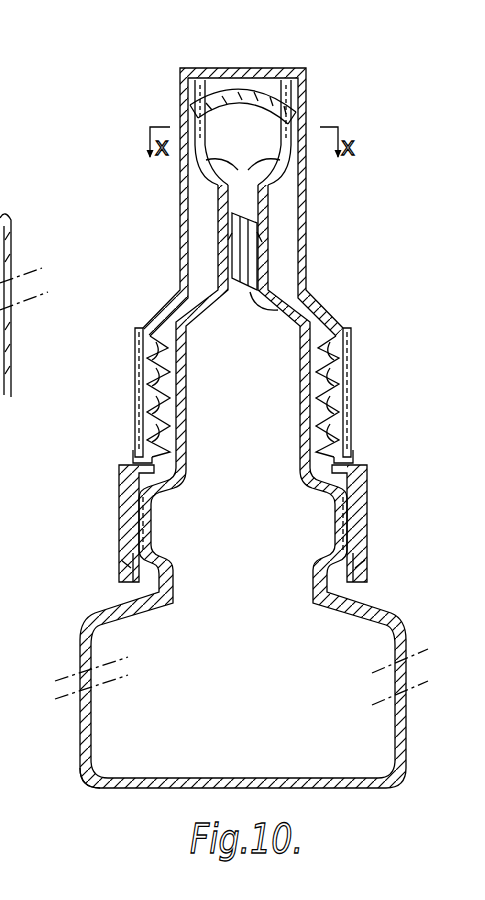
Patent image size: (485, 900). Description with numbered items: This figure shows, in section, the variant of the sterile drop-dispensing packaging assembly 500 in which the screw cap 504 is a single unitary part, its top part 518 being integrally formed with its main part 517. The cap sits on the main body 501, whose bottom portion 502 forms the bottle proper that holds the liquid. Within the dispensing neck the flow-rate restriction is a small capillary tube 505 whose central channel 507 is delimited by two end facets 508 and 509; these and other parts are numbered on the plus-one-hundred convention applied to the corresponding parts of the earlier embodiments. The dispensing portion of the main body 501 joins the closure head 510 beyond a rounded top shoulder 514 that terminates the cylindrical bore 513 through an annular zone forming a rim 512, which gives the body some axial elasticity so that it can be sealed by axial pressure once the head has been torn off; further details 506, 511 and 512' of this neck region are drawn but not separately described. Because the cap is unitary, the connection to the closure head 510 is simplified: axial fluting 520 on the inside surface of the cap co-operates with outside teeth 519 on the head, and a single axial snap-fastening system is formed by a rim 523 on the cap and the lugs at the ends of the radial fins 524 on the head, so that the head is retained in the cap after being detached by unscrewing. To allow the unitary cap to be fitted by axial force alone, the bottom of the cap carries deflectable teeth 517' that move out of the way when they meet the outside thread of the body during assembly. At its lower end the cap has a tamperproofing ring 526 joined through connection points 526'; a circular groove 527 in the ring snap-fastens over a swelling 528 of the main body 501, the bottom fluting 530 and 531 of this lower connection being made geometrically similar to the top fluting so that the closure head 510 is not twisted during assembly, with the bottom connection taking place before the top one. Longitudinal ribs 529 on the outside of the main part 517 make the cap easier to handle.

The packaging assembly 500 is at (48, 467).
The main body 501 is at (77, 650).
The bottom portion 502 is at (82, 743).
The screw cap 504 is at (175, 283).
The capillary tube 505 is at (267, 265).
The valve seat 506 is at (233, 228).
The central channel 507 is at (230, 258).
The end facet 508 is at (267, 240).
The end facet 509 is at (317, 313).
The closure head 510 is at (305, 193).
The upper sleeve portion 511 is at (192, 133).
The rim 512 is at (336, 225).
The diaphragm / dome membrane 512' is at (214, 84).
The cylindrical bore 513 is at (200, 202).
The rounded top shoulder 514 is at (192, 190).
The main part 517 is at (121, 395).
The skirt flange 517' is at (103, 343).
The top part 518 is at (272, 178).
The outside teeth 519 is at (298, 97).
The axial fluting 520 is at (307, 173).
The rim 523 is at (307, 97).
The radial fins 524 is at (208, 82).
The tamperproofing ring 526 is at (98, 523).
The connection points 526' is at (100, 443).
The circular groove 527 is at (117, 563).
The swelling 528 is at (147, 520).
The longitudinal ribs 529 is at (347, 390).
The bottom fluting 530 is at (150, 500).
The bottom fluting 531 is at (130, 482).